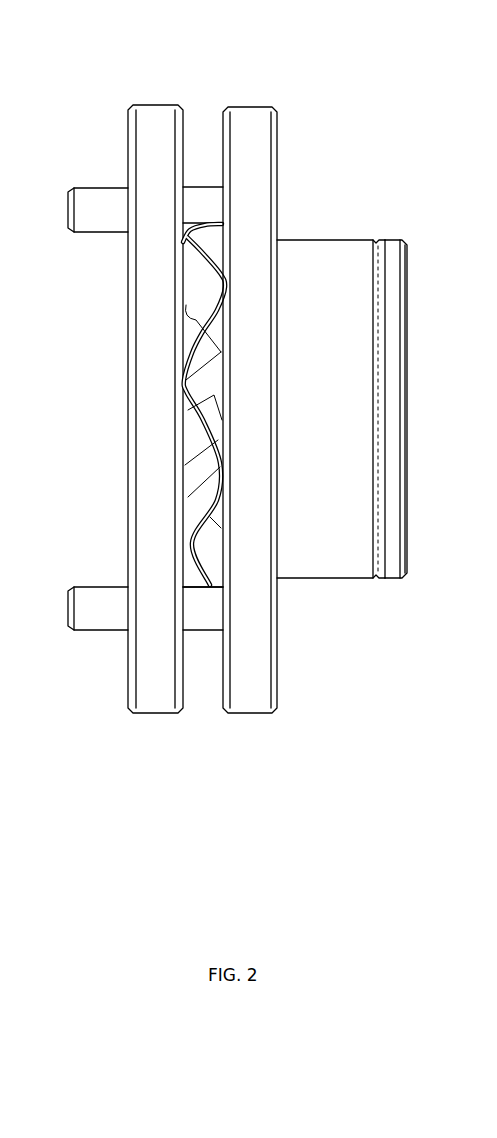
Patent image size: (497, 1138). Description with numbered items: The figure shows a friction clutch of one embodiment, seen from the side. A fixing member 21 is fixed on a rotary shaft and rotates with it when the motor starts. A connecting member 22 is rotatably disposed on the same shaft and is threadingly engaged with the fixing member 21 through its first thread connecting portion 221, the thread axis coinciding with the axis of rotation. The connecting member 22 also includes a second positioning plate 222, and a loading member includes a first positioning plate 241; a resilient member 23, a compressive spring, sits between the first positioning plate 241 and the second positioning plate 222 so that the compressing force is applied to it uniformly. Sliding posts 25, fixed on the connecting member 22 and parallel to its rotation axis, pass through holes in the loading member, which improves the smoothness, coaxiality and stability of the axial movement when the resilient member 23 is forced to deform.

The fixing member 21 is at (405, 230).
The connecting member 22 is at (307, 374).
The first thread connecting portion 221 is at (312, 262).
The second positioning plate 222 is at (268, 169).
The resilient member 23 is at (204, 262).
The first positioning plate 241 is at (152, 658).
The sliding posts 25 is at (100, 198).